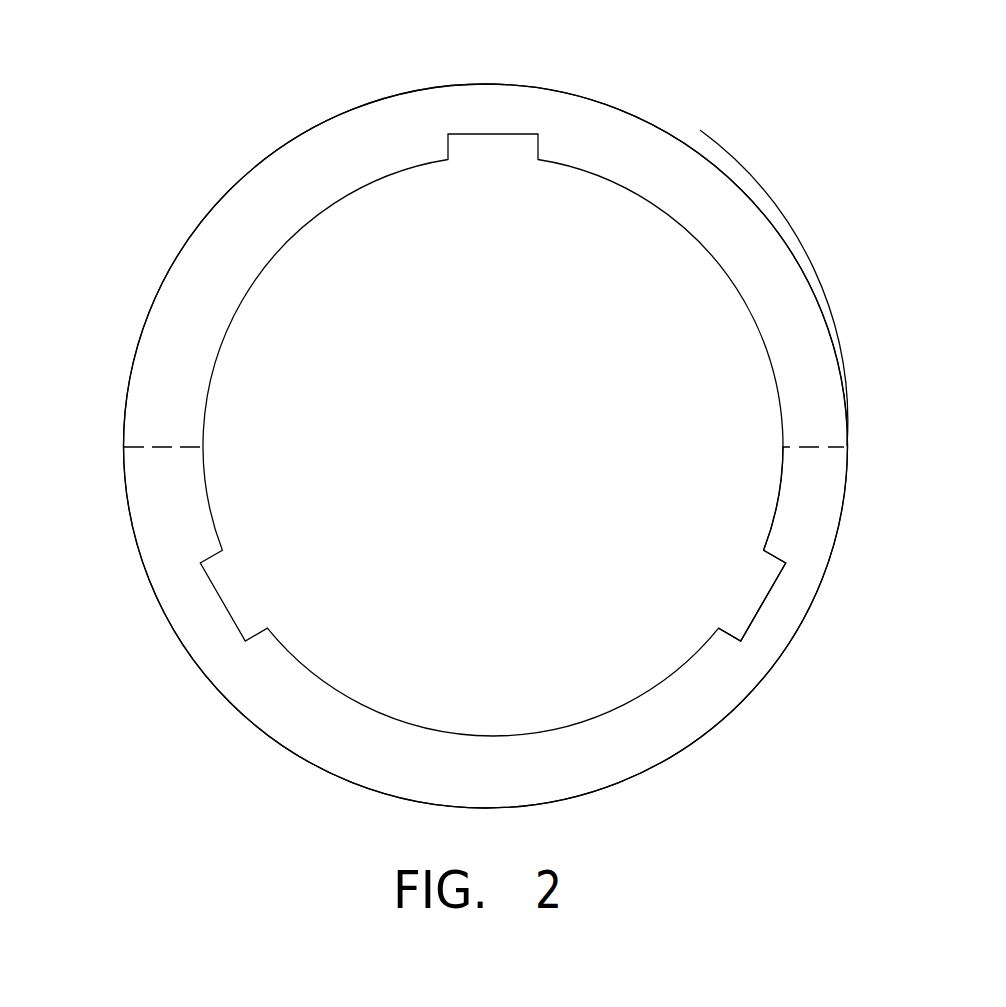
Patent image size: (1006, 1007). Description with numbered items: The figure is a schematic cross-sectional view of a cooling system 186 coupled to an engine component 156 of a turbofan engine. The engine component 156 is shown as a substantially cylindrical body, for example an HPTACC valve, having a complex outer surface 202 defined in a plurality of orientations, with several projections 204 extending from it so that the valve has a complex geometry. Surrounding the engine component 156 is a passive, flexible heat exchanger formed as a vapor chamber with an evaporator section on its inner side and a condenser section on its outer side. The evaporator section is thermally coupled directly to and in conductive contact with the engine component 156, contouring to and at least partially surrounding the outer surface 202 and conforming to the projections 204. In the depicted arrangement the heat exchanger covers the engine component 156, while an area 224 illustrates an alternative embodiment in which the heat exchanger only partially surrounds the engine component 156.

The cooling system 186 is at (778, 125).
The outer surface 202 is at (782, 490).
The projections 204 is at (755, 620).
The area 224 is at (145, 446).
The engine component 156 is at (497, 479).